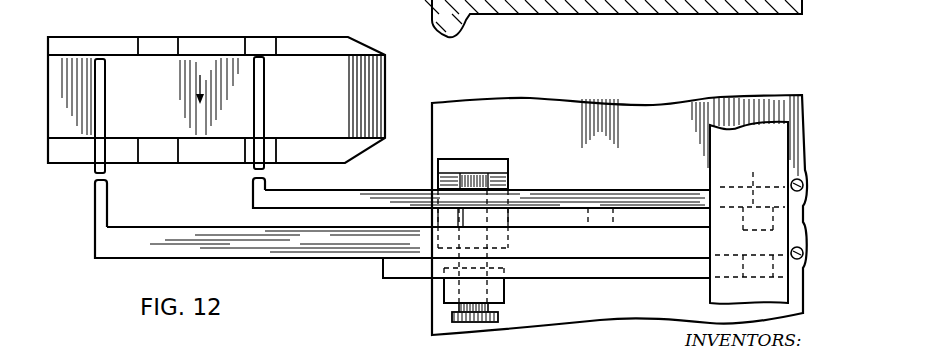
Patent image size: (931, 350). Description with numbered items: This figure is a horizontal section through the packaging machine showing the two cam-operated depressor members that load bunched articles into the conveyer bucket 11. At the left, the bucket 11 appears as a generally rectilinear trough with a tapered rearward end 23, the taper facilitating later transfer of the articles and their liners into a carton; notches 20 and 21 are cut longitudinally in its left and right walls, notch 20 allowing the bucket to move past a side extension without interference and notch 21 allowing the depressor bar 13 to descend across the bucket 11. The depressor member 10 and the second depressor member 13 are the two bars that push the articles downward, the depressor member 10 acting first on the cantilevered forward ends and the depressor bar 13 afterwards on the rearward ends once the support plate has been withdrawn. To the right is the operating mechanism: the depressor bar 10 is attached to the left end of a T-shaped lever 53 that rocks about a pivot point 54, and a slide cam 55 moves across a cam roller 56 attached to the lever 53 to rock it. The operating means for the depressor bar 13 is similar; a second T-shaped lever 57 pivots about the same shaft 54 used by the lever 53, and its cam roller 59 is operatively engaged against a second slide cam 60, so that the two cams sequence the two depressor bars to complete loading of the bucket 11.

The depressor member 10 is at (93, 166).
The bucket 11 is at (236, 38).
The second depressor member 13 is at (247, 163).
The notch 20 is at (147, 48).
The notch 21 is at (268, 50).
The rearward end 23 is at (377, 47).
The T-shaped lever 53 is at (415, 245).
The pivot point 54 is at (492, 172).
The slide cam 55 is at (585, 268).
The cam roller 56 is at (750, 268).
The T-shaped lever 57 is at (536, 192).
The cam roller 59 is at (754, 178).
The slide cam 60 is at (628, 213).